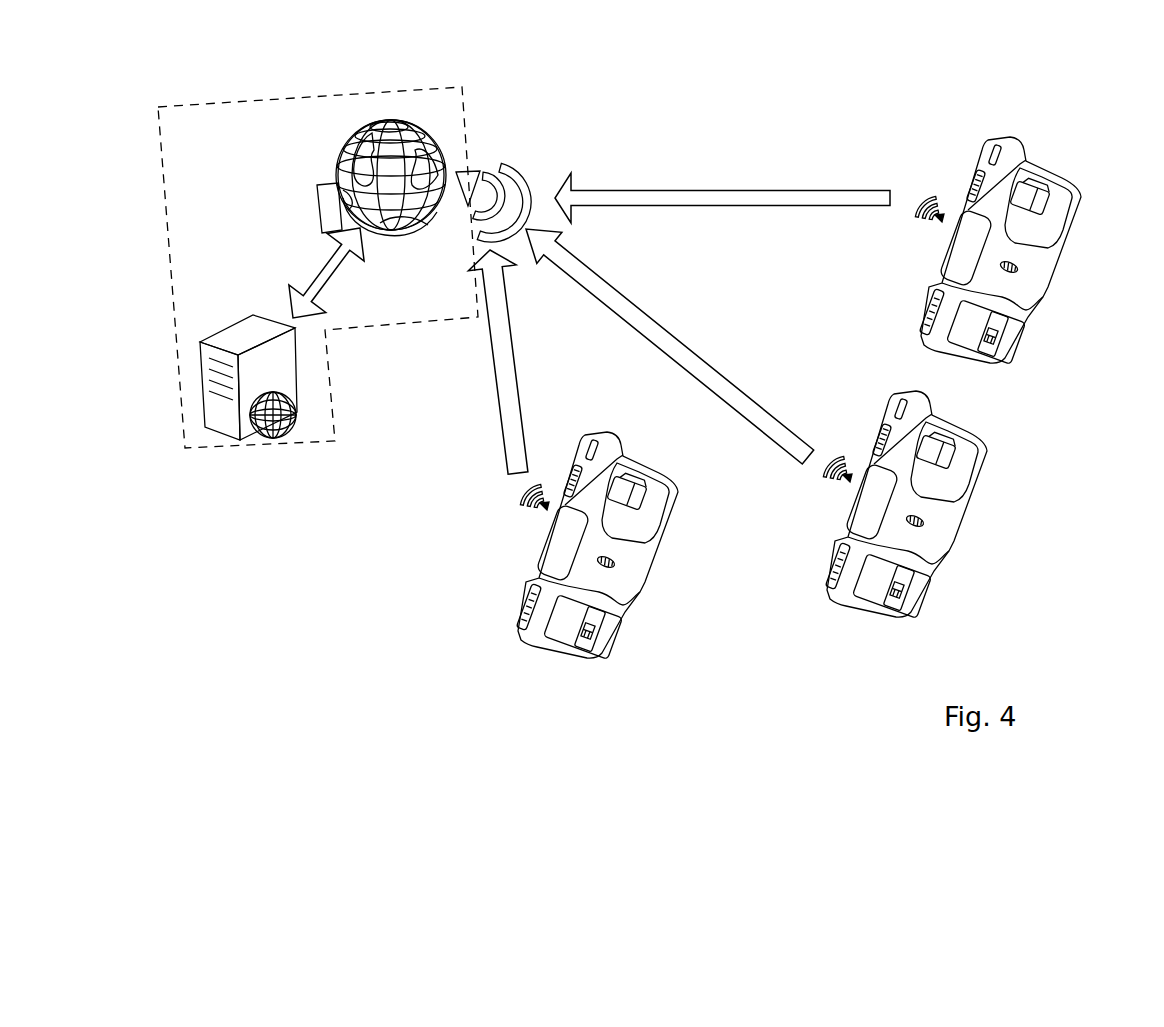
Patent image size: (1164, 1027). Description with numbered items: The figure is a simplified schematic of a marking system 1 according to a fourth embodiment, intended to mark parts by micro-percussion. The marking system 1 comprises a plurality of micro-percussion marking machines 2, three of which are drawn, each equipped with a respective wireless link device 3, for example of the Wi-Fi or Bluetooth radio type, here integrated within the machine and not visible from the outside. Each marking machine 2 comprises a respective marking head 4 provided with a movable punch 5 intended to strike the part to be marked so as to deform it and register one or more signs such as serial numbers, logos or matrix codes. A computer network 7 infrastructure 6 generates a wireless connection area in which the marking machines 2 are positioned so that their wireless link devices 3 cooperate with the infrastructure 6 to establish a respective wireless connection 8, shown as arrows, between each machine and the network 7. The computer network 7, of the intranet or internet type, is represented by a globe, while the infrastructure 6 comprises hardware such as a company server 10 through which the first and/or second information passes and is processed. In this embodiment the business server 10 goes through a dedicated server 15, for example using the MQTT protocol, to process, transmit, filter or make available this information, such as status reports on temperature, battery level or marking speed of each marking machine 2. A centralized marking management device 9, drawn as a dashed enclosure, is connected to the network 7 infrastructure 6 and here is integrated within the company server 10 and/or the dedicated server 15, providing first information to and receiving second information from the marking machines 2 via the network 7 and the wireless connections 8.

The marking system 1 is at (510, 89).
The micro-percussion marking machine 2 is at (832, 395).
The wireless link device 3 is at (1018, 252).
The marking head 4 is at (613, 634).
The movable punch 5 is at (610, 657).
The infrastructure 6 is at (222, 438).
The computer network 7 is at (460, 163).
The wireless connection 8 is at (738, 206).
The centralized marking management device 9 is at (307, 92).
The company server 10 is at (248, 383).
The dedicated server 15 is at (320, 200).